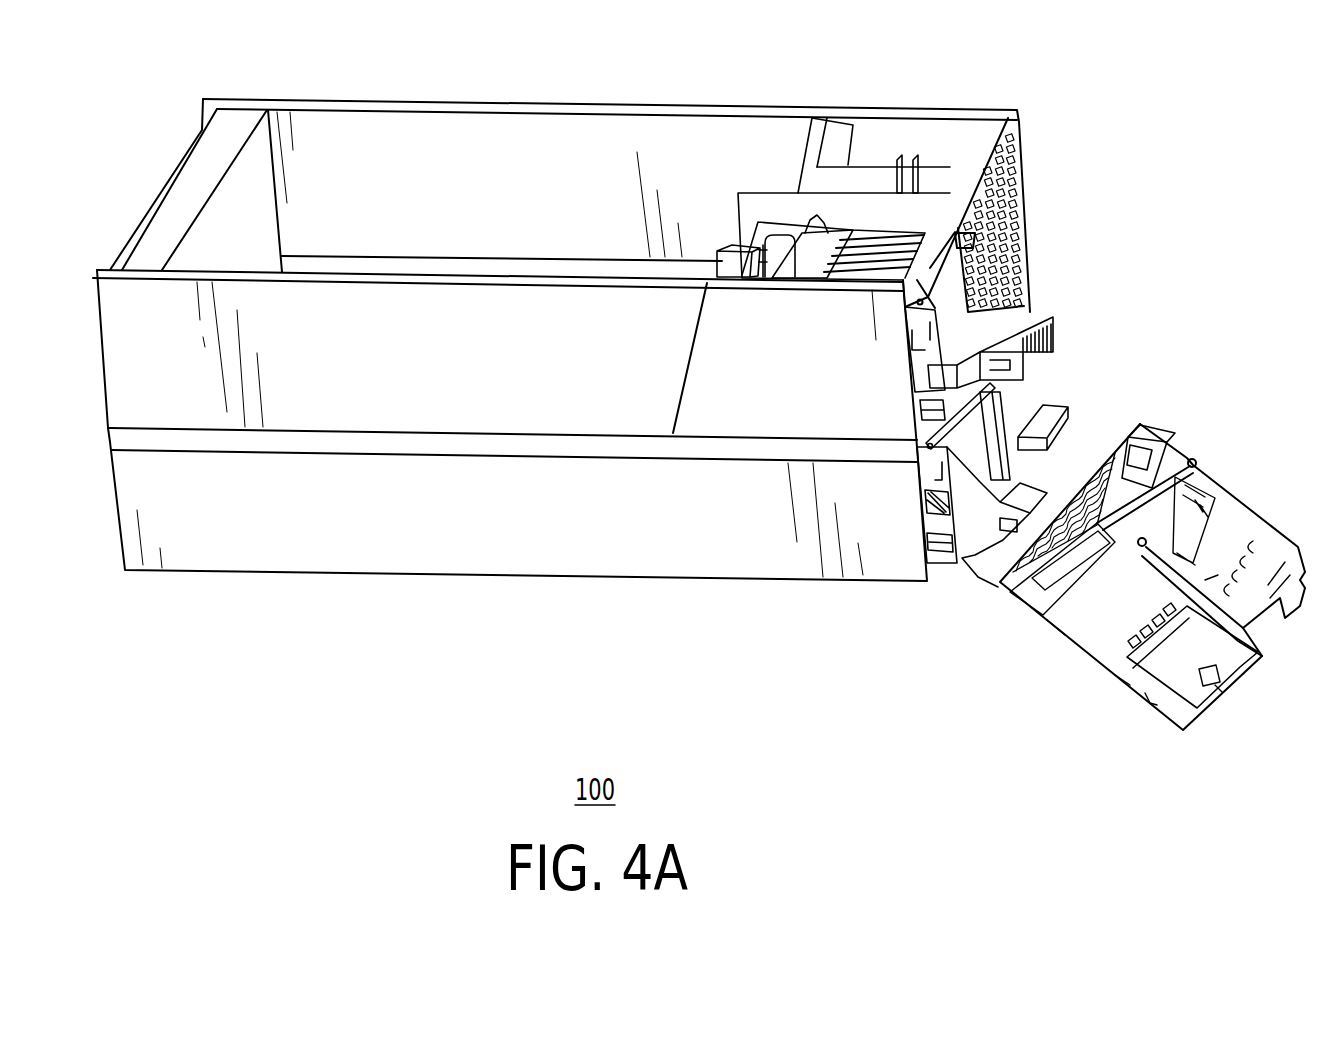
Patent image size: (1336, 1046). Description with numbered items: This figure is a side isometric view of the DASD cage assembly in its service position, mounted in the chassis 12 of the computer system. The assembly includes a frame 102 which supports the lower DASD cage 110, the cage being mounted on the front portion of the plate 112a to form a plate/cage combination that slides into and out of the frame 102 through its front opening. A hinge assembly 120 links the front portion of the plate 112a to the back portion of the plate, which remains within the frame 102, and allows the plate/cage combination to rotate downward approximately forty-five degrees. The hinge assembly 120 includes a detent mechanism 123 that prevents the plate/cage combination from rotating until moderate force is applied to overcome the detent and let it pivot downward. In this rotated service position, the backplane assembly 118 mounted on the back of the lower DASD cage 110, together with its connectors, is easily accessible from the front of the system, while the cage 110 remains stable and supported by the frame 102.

The chassis 12 is at (490, 137).
The frame 102 is at (936, 255).
The detent mechanism 123 is at (1000, 487).
The backplane assembly 118 is at (1150, 450).
The hinge assembly 120 is at (978, 577).
The lower DASD cage 110 is at (1152, 583).
The front portion of the plate 112a is at (1135, 707).